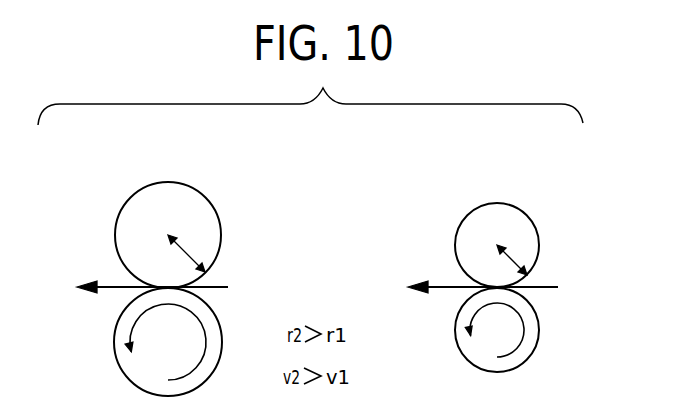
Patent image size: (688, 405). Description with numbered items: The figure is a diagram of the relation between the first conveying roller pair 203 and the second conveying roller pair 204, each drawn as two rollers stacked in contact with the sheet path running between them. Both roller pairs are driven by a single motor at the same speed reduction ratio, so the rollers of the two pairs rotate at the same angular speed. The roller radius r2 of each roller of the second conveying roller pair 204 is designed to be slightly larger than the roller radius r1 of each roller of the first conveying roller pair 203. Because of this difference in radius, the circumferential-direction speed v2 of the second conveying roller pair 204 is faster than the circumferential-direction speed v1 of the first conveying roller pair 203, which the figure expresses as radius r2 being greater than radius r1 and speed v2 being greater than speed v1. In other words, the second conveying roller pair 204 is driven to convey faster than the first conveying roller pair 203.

The second conveying roller pair 204 is at (165, 182).
The first conveying roller pair 203 is at (494, 203).
The roller radius of the second conveying roller pair r2 is at (188, 250).
The roller radius of the first conveying roller pair r1 is at (512, 252).
The circumferential-direction speed of the second conveying roller pair v2 is at (138, 288).
The circumferential-direction speed of the first conveying roller pair v1 is at (468, 288).